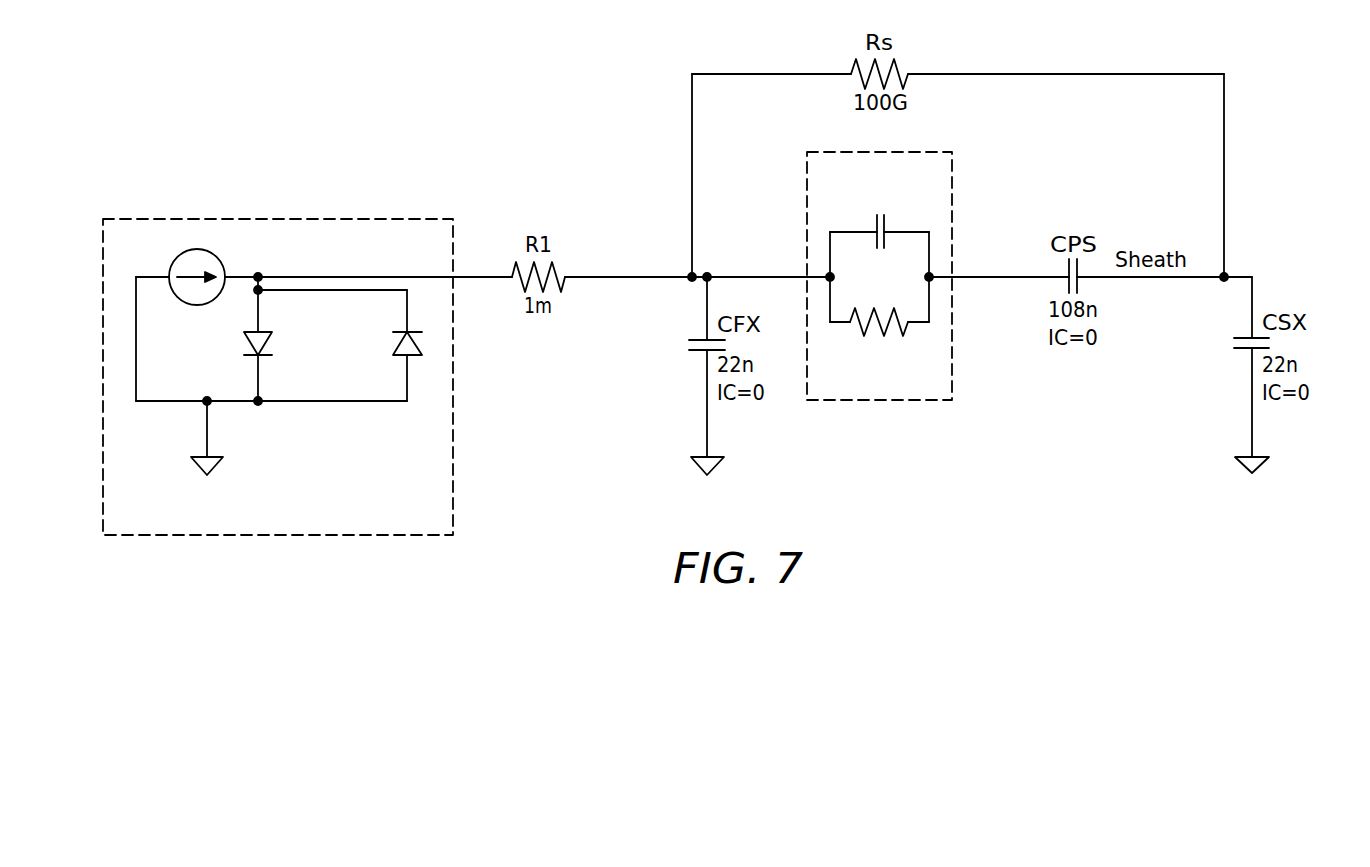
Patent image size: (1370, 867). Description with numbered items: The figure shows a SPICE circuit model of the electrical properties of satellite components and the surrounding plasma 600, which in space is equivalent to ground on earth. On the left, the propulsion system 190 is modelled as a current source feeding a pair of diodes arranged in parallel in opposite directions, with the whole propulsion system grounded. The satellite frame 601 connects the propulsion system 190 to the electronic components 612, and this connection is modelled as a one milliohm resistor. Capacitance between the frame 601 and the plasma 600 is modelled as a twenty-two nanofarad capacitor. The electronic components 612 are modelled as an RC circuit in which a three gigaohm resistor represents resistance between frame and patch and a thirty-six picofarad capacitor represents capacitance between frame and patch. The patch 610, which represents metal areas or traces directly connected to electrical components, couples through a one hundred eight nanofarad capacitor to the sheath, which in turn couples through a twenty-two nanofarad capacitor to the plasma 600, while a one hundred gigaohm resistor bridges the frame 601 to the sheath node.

The propulsion system 190 is at (413, 218).
The satellite frame 601 is at (626, 246).
The patch 610 is at (1007, 246).
The electronic components 612 is at (955, 387).
The surrounding plasma 600 is at (1256, 506).